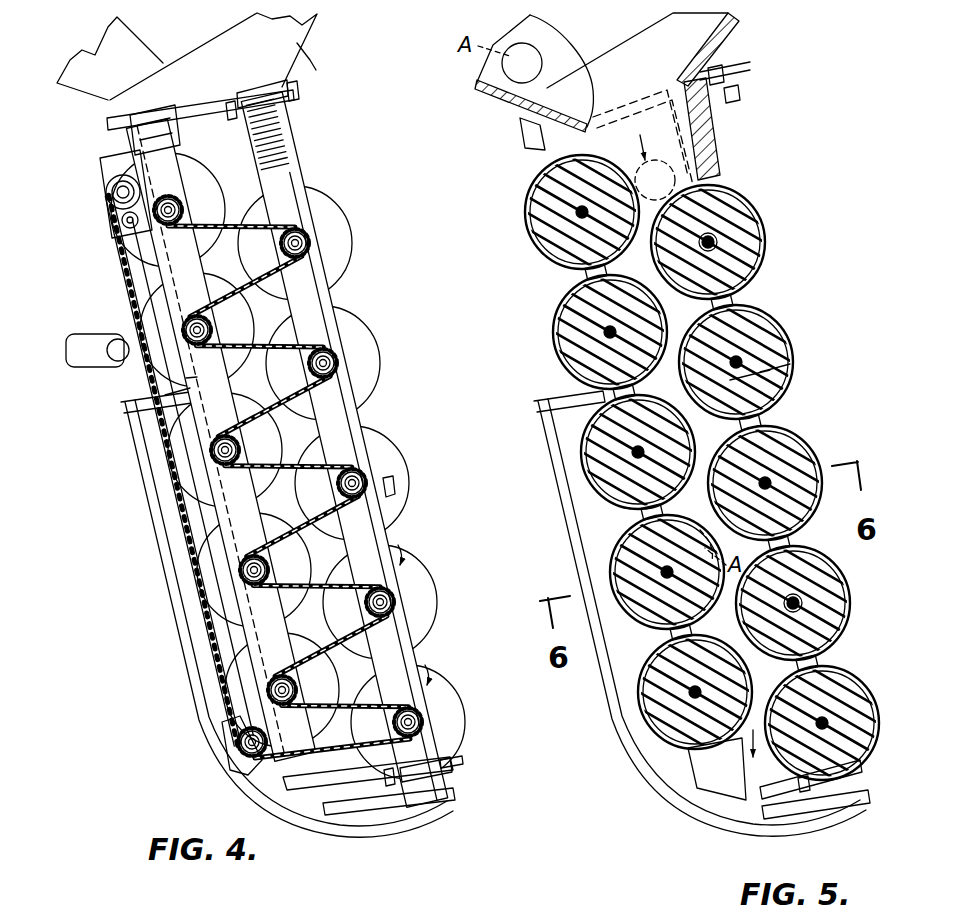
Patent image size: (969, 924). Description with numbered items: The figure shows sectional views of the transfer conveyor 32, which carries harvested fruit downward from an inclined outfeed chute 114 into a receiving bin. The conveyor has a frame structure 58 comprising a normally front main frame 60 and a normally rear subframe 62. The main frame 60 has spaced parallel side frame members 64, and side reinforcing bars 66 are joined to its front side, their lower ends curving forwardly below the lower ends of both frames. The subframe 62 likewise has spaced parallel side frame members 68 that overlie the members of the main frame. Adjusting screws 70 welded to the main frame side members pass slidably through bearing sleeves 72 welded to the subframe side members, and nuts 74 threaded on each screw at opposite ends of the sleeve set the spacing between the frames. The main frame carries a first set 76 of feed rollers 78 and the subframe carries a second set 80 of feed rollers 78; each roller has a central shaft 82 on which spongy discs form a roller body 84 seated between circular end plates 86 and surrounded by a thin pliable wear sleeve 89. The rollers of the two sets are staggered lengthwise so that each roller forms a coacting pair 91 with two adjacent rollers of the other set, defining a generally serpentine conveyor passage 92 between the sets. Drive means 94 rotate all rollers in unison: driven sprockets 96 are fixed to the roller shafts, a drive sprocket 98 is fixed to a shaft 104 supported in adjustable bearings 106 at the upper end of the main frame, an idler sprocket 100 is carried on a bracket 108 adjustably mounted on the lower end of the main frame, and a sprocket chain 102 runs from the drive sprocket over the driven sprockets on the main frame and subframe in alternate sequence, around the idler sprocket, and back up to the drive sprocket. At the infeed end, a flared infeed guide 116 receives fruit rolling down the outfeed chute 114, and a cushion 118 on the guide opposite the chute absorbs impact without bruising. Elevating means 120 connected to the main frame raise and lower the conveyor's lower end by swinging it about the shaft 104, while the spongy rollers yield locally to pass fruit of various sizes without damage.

In FIG. 4, the transfer conveyor 32 is at (355, 182).
In FIG. 5, the transfer conveyor 32 is at (822, 270).
In FIG. 4, the frame structure 58 is at (145, 490).
In FIG. 5, the frame structure 58 is at (634, 764).
In FIG. 4, the main frame 60 is at (208, 521).
In FIG. 5, the main frame 60 is at (570, 282).
In FIG. 4, the subframe 62 is at (315, 302).
In FIG. 5, the subframe 62 is at (792, 420).
In FIG. 4, the side frame members 64 is at (197, 377).
In FIG. 5, the side frame members 64 is at (696, 762).
In FIG. 4, the side reinforcing bars 66 is at (176, 582).
In FIG. 5, the side reinforcing bars 66 is at (574, 512).
In FIG. 4, the side frame members 68 is at (348, 422).
In FIG. 5, the side frame members 68 is at (835, 658).
In FIG. 4, the adjusting screws 70 is at (193, 118).
In FIG. 5, the adjusting screws 70 is at (735, 94).
In FIG. 4, the bearing sleeves 72 is at (255, 92).
In FIG. 4, the nuts 74 is at (229, 103).
In FIG. 5, the nuts 74 is at (716, 110).
In FIG. 4, the first set of feed rollers 76 is at (140, 264).
In FIG. 5, the first set of feed rollers 76 is at (556, 362).
In FIG. 4, the feed rollers 78 is at (185, 453).
In FIG. 5, the feed rollers 78 is at (527, 213).
In FIG. 4, the second set of feed rollers 80 is at (385, 340).
In FIG. 5, the second set of feed rollers 80 is at (765, 230).
In FIG. 5, the central shaft 82 is at (762, 258).
In FIG. 5, the roller body 84 is at (550, 245).
In FIG. 4, the circular end plates 86 is at (388, 486).
In FIG. 5, the wear sleeve 89 is at (788, 342).
In FIG. 4, the coacting pair of opposed rollers 91 is at (402, 523).
In FIG. 4, the conveyor passage 92 is at (300, 622).
In FIG. 5, the conveyor passage 92 is at (770, 378).
In FIG. 4, the drive means 94 is at (223, 224).
In FIG. 4, the driven sprockets 96 is at (178, 204).
In FIG. 4, the drive sprocket 98 is at (112, 214).
In FIG. 4, the idler sprocket 100 is at (243, 742).
In FIG. 4, the sprocket chain 102 is at (128, 295).
In FIG. 4, the shaft 104 is at (115, 190).
In FIG. 4, the adjustable bearings 106 is at (122, 228).
In FIG. 4, the bracket 108 is at (262, 768).
In FIG. 4, the outfeed chute 114 is at (138, 50).
In FIG. 5, the outfeed chute 114 is at (512, 95).
In FIG. 4, the flared infeed guide 116 is at (305, 22).
In FIG. 5, the flared infeed guide 116 is at (650, 38).
In FIG. 5, the cushion 118 is at (722, 40).
In FIG. 4, the elevating means 120 is at (63, 366).